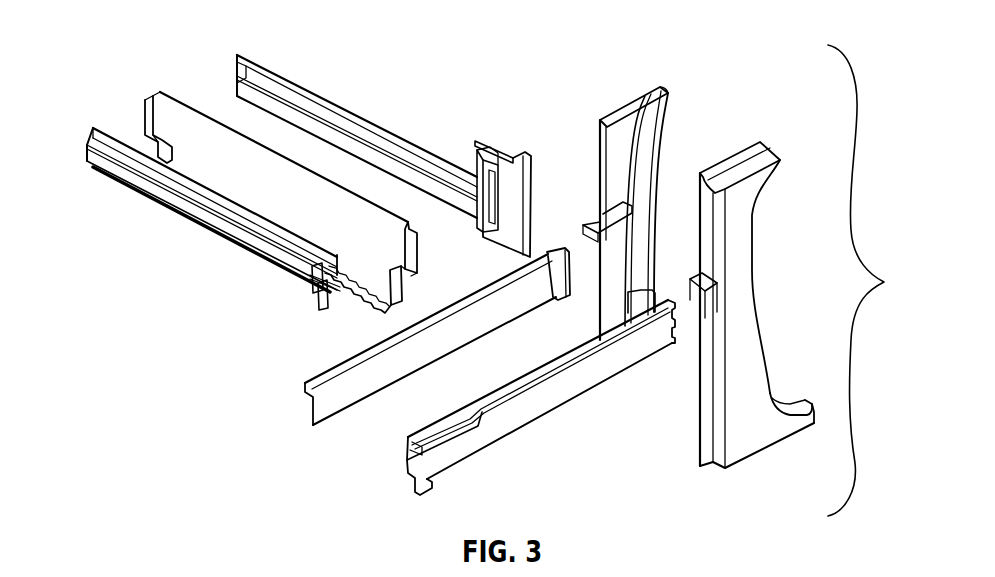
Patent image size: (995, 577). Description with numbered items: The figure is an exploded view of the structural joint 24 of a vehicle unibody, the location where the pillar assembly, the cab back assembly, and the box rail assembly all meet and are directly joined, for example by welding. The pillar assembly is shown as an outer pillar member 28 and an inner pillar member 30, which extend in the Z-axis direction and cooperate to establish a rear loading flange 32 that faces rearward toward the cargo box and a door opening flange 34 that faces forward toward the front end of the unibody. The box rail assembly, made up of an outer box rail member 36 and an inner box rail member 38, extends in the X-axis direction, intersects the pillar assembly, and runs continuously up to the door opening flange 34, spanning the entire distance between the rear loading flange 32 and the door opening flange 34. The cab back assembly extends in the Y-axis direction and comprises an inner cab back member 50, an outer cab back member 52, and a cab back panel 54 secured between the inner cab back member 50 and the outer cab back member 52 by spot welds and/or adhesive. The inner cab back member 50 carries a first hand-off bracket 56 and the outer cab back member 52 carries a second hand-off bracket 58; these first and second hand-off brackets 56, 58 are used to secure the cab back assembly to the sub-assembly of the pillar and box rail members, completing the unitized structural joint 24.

The structural joint 24 is at (871, 280).
The outer pillar member 28 is at (752, 440).
The inner pillar member 30 is at (618, 147).
The rear loading flange 32 is at (598, 228).
The door opening flange 34 is at (666, 100).
The outer box rail member 36 is at (482, 435).
The inner box rail member 38 is at (350, 392).
The inner cab back member 50 is at (316, 98).
The outer cab back member 52 is at (177, 203).
The cab back panel 54 is at (193, 128).
The first hand-off bracket 56 is at (500, 165).
The second hand-off bracket 58 is at (310, 285).